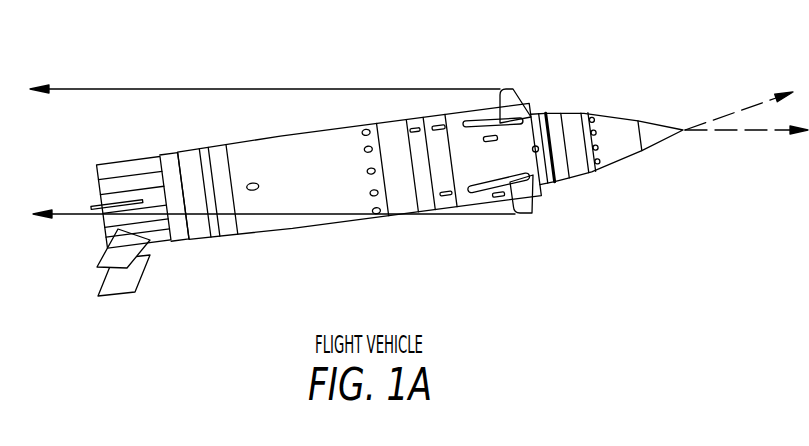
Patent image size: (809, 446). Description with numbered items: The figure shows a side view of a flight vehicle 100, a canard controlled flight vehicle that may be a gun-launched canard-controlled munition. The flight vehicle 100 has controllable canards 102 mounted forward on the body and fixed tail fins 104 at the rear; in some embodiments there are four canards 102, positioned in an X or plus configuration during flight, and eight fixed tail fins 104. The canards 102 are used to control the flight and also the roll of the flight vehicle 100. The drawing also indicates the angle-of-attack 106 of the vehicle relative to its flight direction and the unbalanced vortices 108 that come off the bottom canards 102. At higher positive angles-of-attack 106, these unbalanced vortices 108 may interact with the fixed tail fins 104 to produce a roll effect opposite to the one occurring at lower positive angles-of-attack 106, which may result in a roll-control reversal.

The flight vehicle 100 is at (347, 240).
The canards 102 is at (517, 96).
The fixed tail fins 104 is at (141, 276).
The angle-of-attack 106 is at (741, 148).
The unbalanced vortices 108 is at (257, 87).